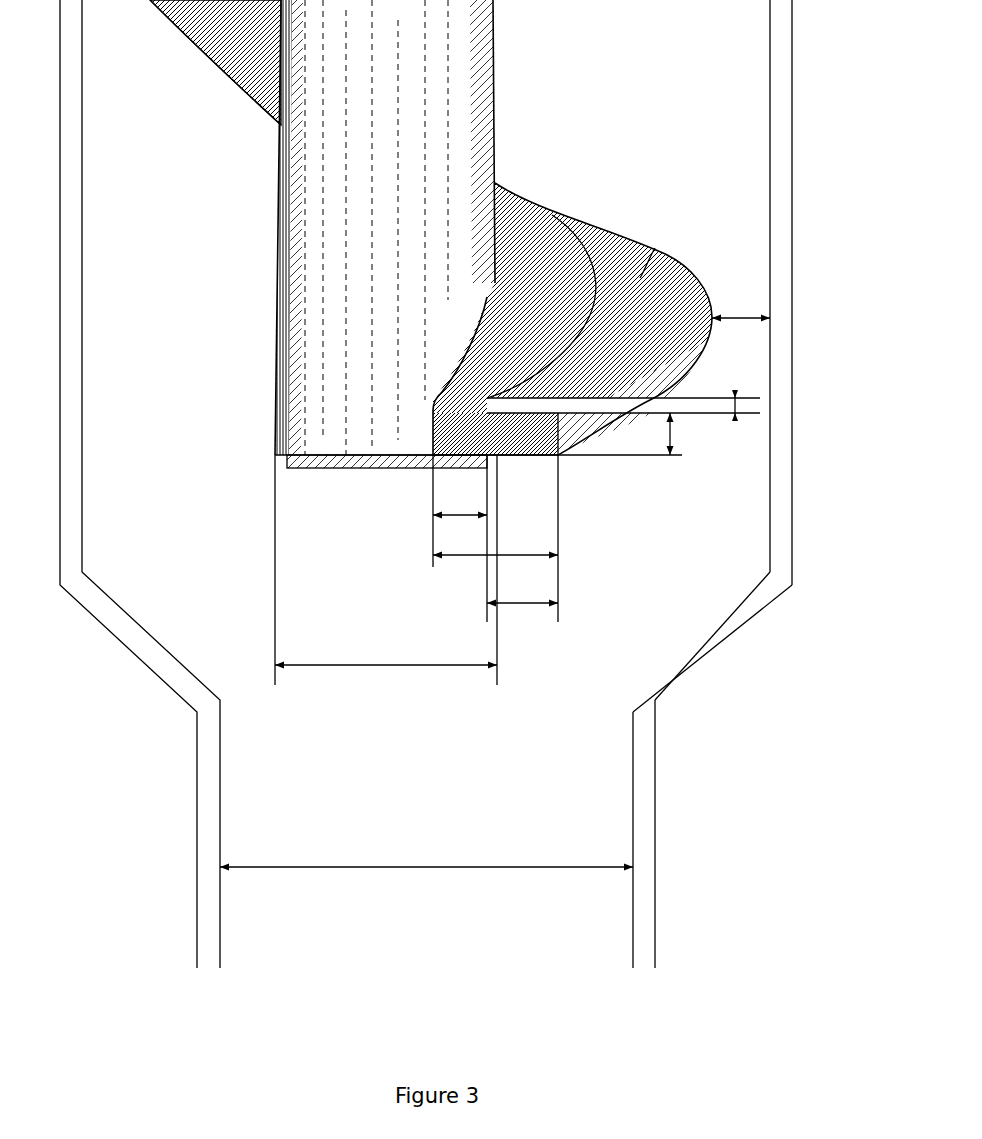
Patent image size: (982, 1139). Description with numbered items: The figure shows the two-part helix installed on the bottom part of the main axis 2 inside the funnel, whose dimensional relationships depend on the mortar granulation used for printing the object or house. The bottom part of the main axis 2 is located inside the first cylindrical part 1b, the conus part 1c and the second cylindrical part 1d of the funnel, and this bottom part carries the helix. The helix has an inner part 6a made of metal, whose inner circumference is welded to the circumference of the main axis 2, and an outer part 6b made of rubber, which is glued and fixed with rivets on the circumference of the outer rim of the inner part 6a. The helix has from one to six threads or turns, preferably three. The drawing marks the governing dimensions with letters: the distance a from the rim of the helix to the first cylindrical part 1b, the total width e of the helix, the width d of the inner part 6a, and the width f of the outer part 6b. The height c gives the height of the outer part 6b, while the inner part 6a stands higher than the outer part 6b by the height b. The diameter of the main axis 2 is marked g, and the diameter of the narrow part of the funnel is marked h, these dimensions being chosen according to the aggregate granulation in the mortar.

The main axis 2 is at (472, 87).
The inner part of the helix 6a is at (538, 253).
The outer part of the helix 6b is at (645, 273).
The first cylindrical part 1b is at (779, 508).
The conus part 1c is at (705, 650).
The second cylindrical part 1d is at (644, 824).
The distance from the rim of the helix to part 1b of the funnel a is at (741, 301).
The height difference between inner and outer helix parts b is at (736, 389).
The height of the outer part of the helix c is at (627, 433).
The width of the inner part of the helix d is at (460, 538).
The width of the helix e is at (495, 538).
The width of the outer part of the helix f is at (522, 586).
The diameter of the main axis g is at (386, 570).
The diameter of the narrow part h is at (426, 852).